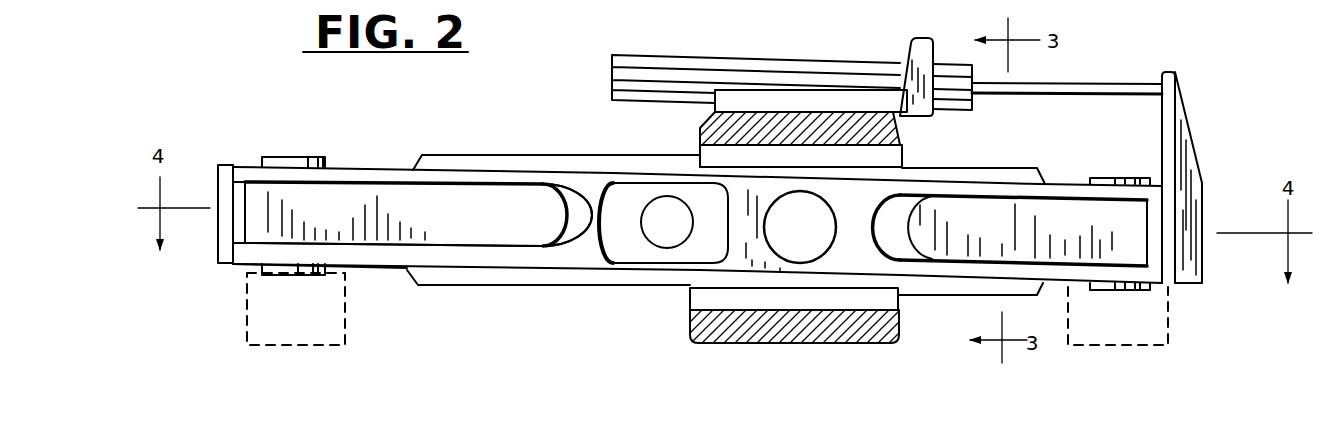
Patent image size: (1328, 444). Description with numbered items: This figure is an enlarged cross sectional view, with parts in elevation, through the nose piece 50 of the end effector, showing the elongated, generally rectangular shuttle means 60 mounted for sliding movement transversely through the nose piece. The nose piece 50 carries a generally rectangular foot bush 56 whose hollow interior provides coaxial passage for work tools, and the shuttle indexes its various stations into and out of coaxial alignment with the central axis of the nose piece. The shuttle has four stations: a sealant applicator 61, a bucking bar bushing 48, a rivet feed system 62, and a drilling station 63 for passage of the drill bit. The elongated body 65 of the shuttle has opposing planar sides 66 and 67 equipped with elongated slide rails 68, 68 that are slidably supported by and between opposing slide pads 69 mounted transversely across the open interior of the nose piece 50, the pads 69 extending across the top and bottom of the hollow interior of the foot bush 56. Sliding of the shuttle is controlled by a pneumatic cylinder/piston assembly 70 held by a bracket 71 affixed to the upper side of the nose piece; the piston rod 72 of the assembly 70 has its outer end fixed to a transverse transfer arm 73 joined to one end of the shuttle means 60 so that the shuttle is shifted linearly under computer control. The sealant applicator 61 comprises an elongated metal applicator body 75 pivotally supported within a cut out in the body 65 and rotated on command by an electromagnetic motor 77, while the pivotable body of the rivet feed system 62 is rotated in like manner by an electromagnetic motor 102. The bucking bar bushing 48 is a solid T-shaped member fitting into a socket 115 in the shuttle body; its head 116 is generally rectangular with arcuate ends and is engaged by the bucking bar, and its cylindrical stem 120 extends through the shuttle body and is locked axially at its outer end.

The bucking bar bushing 48 is at (617, 237).
The nose piece 50 is at (843, 346).
The foot bush 56 is at (898, 128).
The shuttle means 60 is at (369, 152).
The sealant applicator 61 is at (460, 220).
The rivet feed system 62 is at (1045, 236).
The drilling station 63 is at (838, 238).
The elongated body 65 is at (587, 187).
The planar side 66 is at (400, 165).
The planar side 67 is at (382, 269).
The slide rail 68 is at (1010, 167).
The slide pad 69 is at (903, 156).
The pneumatic cylinder/piston assembly 70 is at (798, 67).
The bracket 71 is at (934, 47).
The piston rod 72 is at (1070, 81).
The transfer arm 73 is at (1192, 125).
The applicator body 75 is at (374, 212).
The electromagnetic motor 77 is at (247, 310).
The electromagnetic motor 102 is at (1170, 327).
The socket 115 is at (611, 192).
The head 116 is at (622, 205).
The stem 120 is at (662, 242).